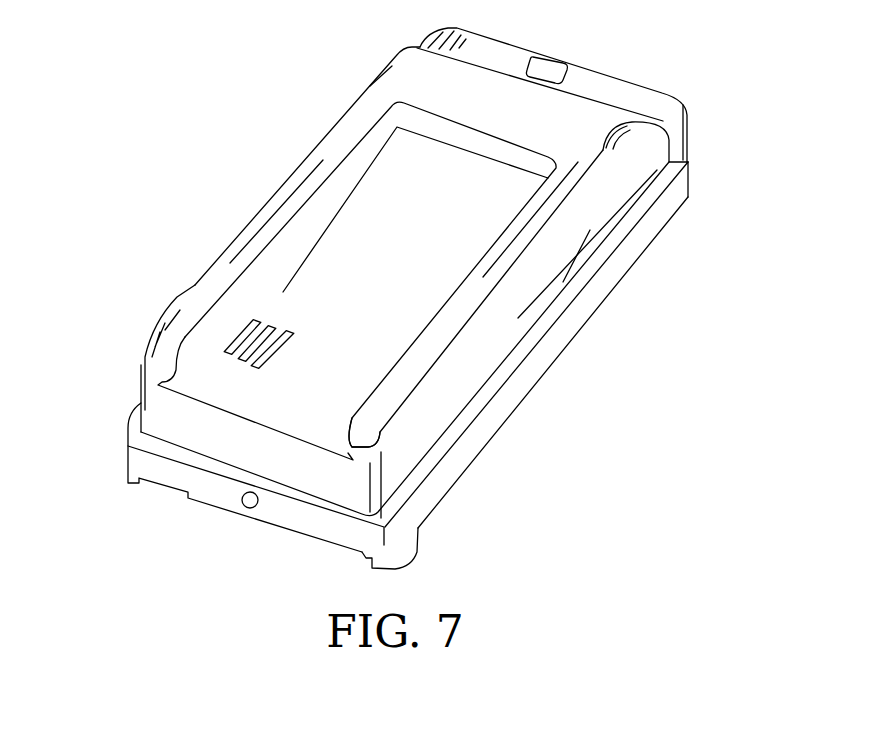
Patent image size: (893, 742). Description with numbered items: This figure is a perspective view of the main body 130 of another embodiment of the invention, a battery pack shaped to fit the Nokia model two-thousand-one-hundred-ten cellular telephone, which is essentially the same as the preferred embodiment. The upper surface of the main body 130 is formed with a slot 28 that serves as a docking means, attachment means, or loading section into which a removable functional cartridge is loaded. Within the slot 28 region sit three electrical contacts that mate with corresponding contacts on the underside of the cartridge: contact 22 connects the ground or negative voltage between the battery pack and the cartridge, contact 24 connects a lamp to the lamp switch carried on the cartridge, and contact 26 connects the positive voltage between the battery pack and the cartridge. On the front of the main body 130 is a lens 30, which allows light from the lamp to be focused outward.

The main body 130 is at (588, 113).
The contact 22 is at (240, 342).
The contact 24 is at (261, 323).
The contact 26 is at (285, 330).
The slot 28 is at (347, 453).
The lens 30 is at (242, 502).